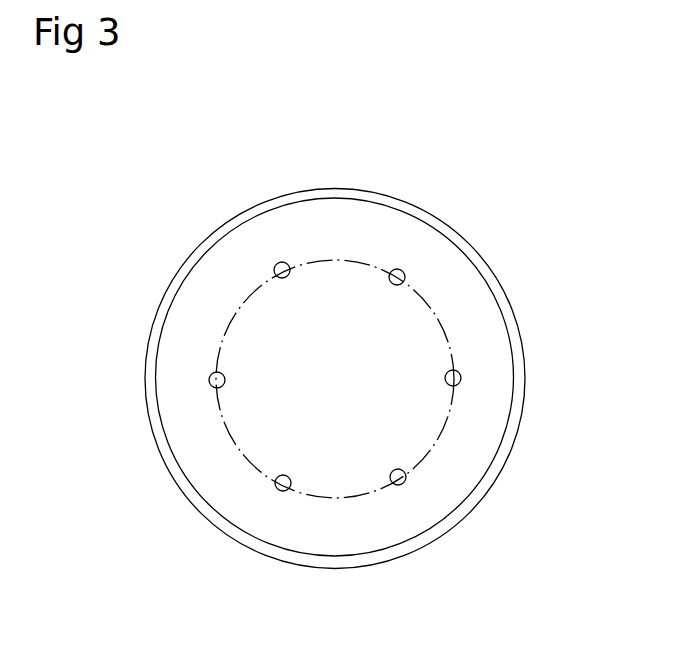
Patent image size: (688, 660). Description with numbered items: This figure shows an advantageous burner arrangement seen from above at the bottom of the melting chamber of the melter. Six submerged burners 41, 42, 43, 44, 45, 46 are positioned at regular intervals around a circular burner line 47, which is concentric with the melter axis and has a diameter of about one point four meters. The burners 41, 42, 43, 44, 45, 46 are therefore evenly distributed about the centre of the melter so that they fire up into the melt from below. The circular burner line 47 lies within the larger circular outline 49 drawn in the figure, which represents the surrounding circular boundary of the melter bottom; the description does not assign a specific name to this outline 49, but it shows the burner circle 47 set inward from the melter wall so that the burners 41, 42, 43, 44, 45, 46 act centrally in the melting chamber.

The submerged burner 41 is at (209, 380).
The submerged burner 42 is at (276, 264).
The submerged burner 43 is at (403, 271).
The submerged burner 44 is at (461, 378).
The submerged burner 45 is at (406, 477).
The submerged burner 46 is at (279, 490).
The circular burner line 47 is at (445, 415).
The outer ring 49 is at (505, 308).